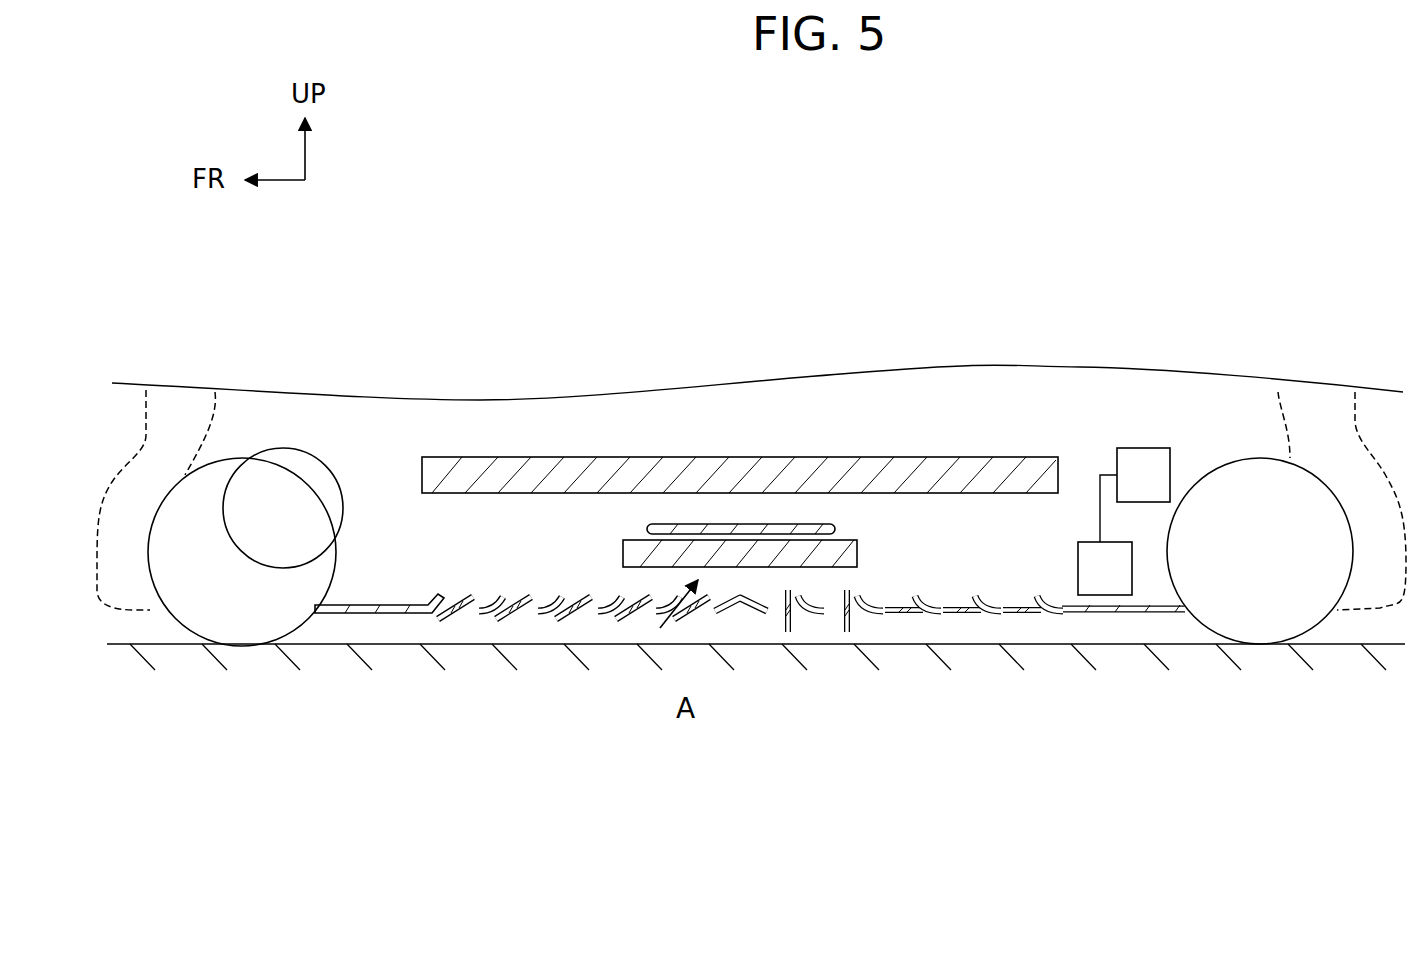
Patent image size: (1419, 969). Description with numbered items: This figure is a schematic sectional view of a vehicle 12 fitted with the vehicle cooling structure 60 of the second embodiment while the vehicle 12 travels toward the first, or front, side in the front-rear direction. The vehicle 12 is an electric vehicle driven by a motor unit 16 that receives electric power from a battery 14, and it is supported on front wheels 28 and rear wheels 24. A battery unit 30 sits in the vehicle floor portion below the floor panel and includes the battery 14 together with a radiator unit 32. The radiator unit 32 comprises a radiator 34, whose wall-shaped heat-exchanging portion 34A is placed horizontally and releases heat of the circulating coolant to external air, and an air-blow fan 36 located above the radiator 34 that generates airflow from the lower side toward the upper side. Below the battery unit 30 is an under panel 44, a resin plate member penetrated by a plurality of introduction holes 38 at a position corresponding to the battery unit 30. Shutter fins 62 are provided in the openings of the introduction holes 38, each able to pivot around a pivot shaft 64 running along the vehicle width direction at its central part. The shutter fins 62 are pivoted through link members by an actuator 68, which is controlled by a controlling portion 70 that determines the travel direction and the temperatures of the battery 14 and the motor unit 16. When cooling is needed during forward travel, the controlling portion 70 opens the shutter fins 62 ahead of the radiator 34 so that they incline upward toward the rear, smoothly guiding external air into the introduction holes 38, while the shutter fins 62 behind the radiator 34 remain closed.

The vehicle 12 is at (1356, 426).
The battery 14 is at (838, 457).
The motor unit 16 is at (287, 450).
The rear wheels 24 is at (1278, 392).
The front wheels 28 is at (215, 392).
The battery unit 30 is at (891, 454).
The radiator unit 32 is at (618, 557).
The radiator 34 is at (857, 553).
The heat-exchanging portion 34A is at (743, 572).
The air-blow fan 36 is at (797, 524).
The introduction holes 38 is at (687, 593).
The under panel 44 is at (380, 622).
The vehicle cooling structure 60 is at (1003, 410).
The shutter fins 62 is at (442, 622).
The pivot shaft 64 is at (492, 614).
The actuator 68 is at (1078, 557).
The controlling portion 70 is at (1141, 448).